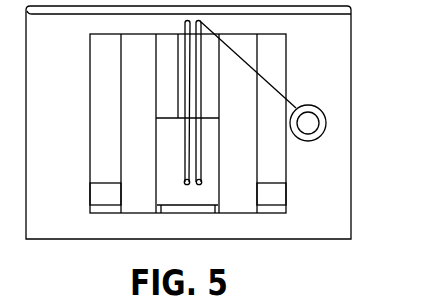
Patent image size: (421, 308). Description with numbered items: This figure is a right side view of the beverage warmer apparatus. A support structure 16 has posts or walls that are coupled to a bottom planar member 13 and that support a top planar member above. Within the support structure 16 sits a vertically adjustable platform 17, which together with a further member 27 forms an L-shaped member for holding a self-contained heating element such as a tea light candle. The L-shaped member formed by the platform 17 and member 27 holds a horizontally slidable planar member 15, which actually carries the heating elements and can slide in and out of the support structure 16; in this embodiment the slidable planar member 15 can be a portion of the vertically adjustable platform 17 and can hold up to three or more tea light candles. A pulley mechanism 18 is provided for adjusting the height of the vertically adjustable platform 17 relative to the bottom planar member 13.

The bottom planar member 13 is at (209, 229).
The horizontally slidable planar member 15 is at (103, 189).
The support structure 16 is at (48, 170).
The vertically adjustable platform 17 is at (178, 208).
The pulley mechanism 18 is at (327, 109).
The L-shaped member 27 is at (170, 142).